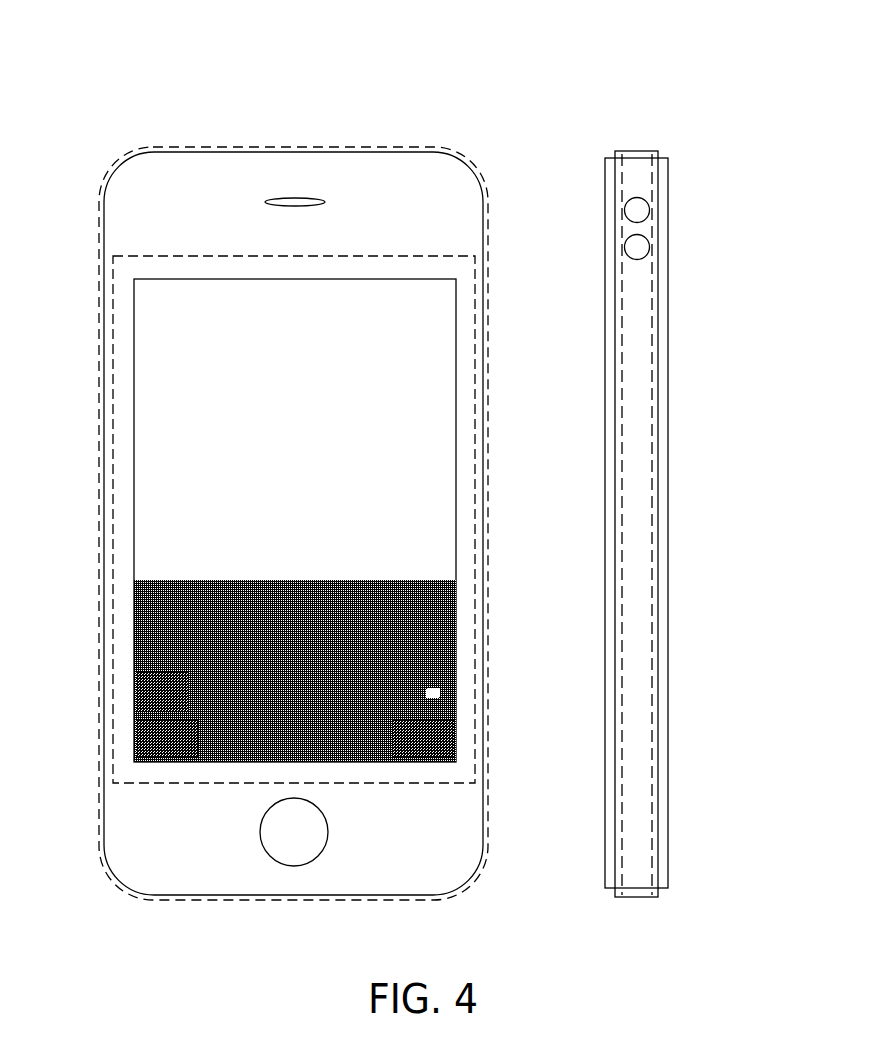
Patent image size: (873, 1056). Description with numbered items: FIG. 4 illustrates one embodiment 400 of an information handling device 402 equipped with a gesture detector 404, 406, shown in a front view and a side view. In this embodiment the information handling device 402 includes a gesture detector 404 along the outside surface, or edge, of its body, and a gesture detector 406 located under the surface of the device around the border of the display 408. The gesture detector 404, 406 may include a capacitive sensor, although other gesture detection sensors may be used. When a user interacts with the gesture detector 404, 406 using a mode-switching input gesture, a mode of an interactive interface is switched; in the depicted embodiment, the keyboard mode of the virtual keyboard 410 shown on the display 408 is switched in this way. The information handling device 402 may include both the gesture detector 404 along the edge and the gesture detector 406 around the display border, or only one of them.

The embodiment of an information handling device with a gesture detector 400 is at (88, 58).
The information handling device 402 is at (118, 193).
The gesture detector 404 is at (102, 310).
The gesture detector 406 is at (118, 400).
The display 408 is at (143, 510).
The virtual keyboard 410 is at (150, 664).